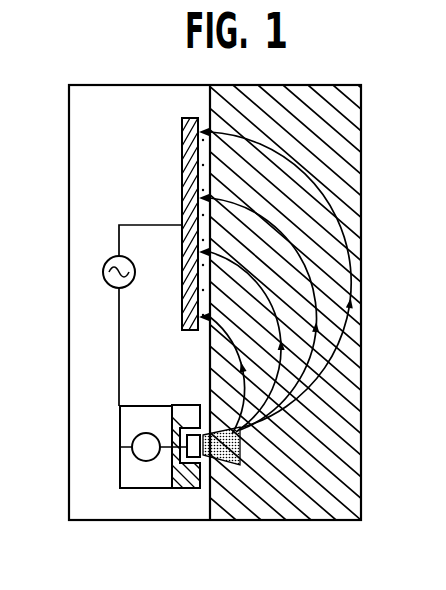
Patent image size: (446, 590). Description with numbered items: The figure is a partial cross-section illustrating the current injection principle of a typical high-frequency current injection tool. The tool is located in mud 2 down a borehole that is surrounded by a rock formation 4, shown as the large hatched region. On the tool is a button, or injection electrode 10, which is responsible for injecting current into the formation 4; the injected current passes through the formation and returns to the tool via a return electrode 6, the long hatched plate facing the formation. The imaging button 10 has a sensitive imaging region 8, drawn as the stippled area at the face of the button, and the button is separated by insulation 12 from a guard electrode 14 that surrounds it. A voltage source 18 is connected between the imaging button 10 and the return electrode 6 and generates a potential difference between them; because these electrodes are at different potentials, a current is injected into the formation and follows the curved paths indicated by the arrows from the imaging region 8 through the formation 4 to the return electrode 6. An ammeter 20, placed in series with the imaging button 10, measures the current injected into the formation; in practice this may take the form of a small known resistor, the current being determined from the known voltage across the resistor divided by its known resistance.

The mud 2 is at (95, 158).
The rock formation 4 is at (325, 148).
The return electrode 6 is at (188, 184).
The sensitive imaging region 8 is at (204, 428).
The injection electrode 10 is at (188, 405).
The insulation 12 is at (212, 466).
The guard electrode 14 is at (185, 491).
The voltage source 18 is at (103, 270).
The ammeter 20 is at (133, 440).